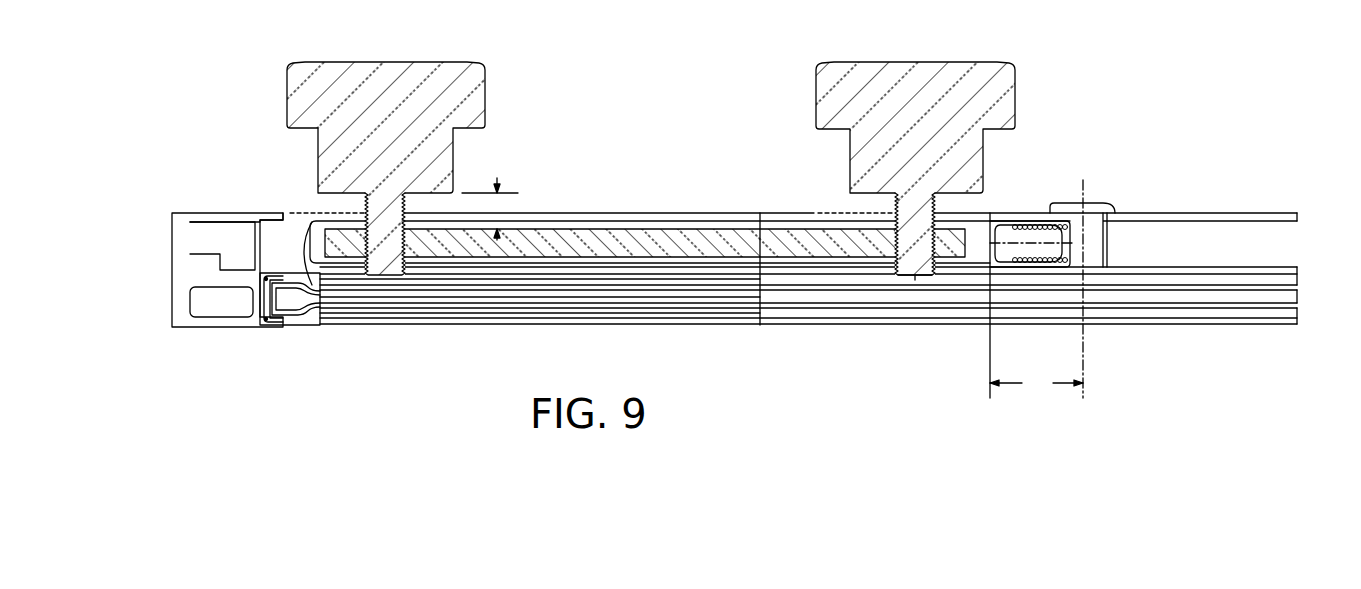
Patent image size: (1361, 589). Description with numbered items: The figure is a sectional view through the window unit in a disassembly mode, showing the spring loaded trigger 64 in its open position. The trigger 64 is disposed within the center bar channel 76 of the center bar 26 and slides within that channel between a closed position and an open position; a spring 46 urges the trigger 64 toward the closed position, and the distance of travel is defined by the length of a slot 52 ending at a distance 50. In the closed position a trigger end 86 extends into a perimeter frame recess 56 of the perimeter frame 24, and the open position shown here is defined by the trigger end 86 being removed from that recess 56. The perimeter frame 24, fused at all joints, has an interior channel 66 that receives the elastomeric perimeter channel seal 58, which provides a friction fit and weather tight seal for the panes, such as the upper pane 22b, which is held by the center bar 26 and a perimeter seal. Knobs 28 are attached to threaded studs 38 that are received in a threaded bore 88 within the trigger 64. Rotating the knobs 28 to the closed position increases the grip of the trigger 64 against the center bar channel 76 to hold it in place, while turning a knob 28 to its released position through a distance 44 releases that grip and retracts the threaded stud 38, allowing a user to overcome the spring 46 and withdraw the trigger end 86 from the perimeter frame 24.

The knob 28 is at (485, 105).
The threaded stud 38 is at (363, 213).
The slot 52 is at (333, 220).
The center bar channel 76 is at (278, 228).
The perimeter frame 24 is at (176, 268).
The perimeter frame recess 56 is at (272, 258).
The interior channel 66 is at (267, 322).
The perimeter channel seal 58 is at (302, 320).
The upper pane 22b is at (303, 298).
The trigger end 86 is at (312, 285).
The distance 44 is at (497, 178).
The spring loaded trigger 64 is at (592, 242).
The spring 46 is at (1033, 224).
The center bar 26 is at (1152, 238).
The threaded bore 88 is at (935, 268).
The distance 50 is at (1036, 289).